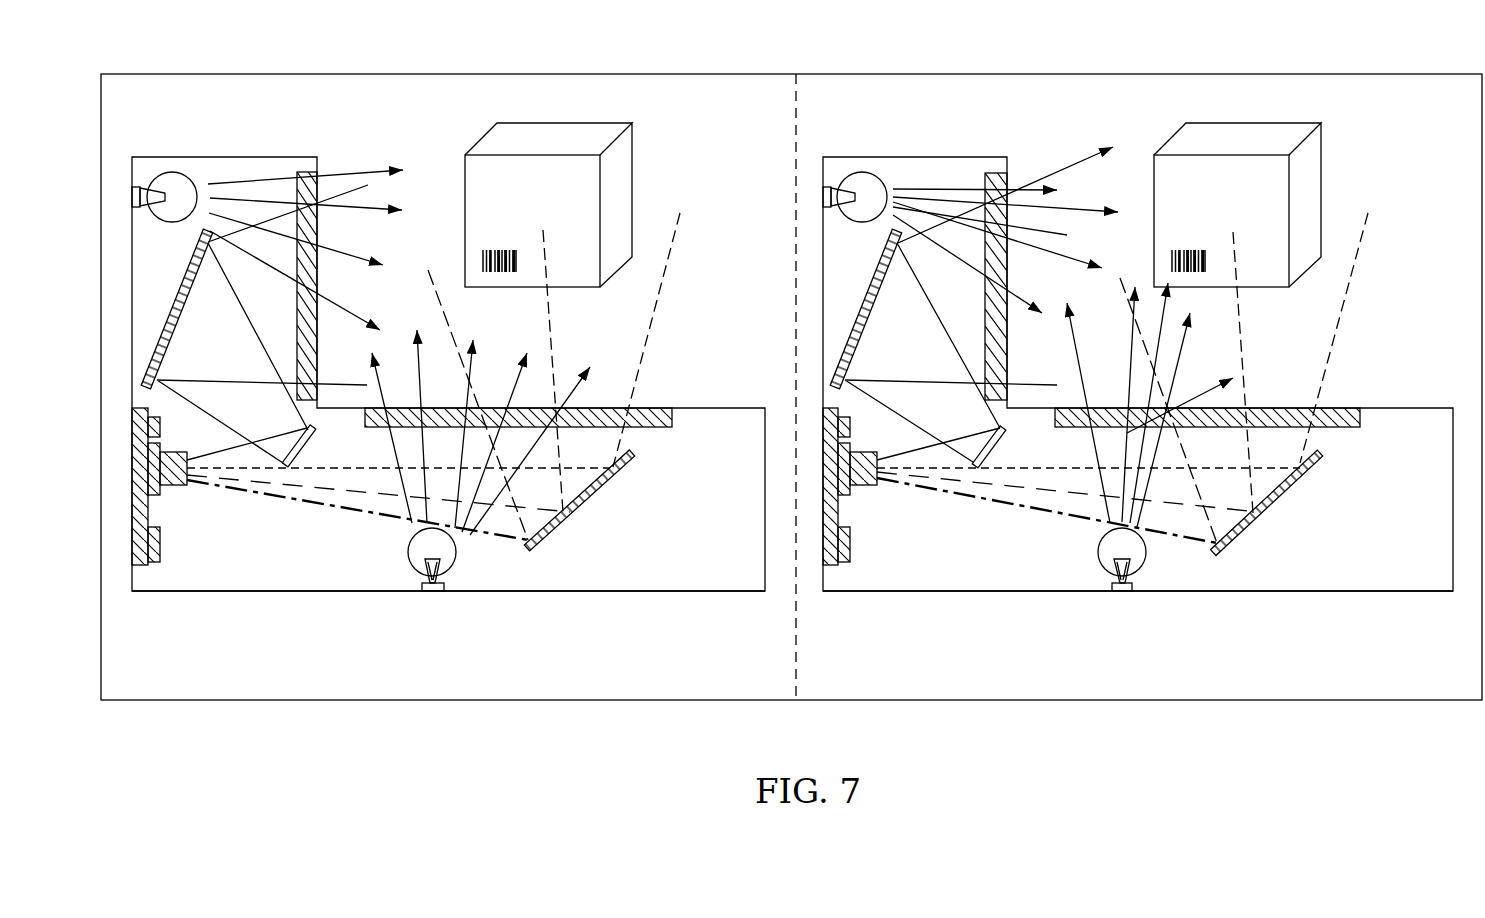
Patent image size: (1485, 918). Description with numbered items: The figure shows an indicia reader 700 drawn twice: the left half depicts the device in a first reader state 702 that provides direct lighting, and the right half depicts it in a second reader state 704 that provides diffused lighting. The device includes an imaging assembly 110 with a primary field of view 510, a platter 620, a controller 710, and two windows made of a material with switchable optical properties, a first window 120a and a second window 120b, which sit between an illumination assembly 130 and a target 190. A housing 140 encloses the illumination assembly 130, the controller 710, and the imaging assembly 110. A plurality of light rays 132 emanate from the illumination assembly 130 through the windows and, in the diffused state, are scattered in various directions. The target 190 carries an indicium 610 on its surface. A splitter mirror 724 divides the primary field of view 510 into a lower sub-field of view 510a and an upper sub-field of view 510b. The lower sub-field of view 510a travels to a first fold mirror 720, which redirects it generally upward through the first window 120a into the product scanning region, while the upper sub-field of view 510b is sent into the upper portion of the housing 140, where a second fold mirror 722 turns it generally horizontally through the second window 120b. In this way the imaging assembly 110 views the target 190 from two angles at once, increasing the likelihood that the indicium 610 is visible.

The indicia reader 700 is at (786, 74).
The first reader state 702 is at (330, 130).
The second reader state 704 is at (1072, 137).
The imaging assembly 110 is at (187, 483).
The first window 120a is at (650, 417).
The second window 120b is at (308, 278).
The illumination assembly 130 is at (177, 187).
The light rays 132 is at (507, 378).
The housing 140 is at (541, 592).
The target 190 is at (623, 158).
The primary field of view 510 is at (1013, 493).
The lower sub-field of view 510a is at (657, 308).
The upper sub-field of view 510b is at (297, 327).
The indicium 610 is at (482, 262).
The platter 620 is at (716, 410).
The controller 710 is at (152, 562).
The first fold mirror 720 is at (587, 503).
The second fold mirror 722 is at (180, 293).
The splitter mirror 724 is at (316, 435).